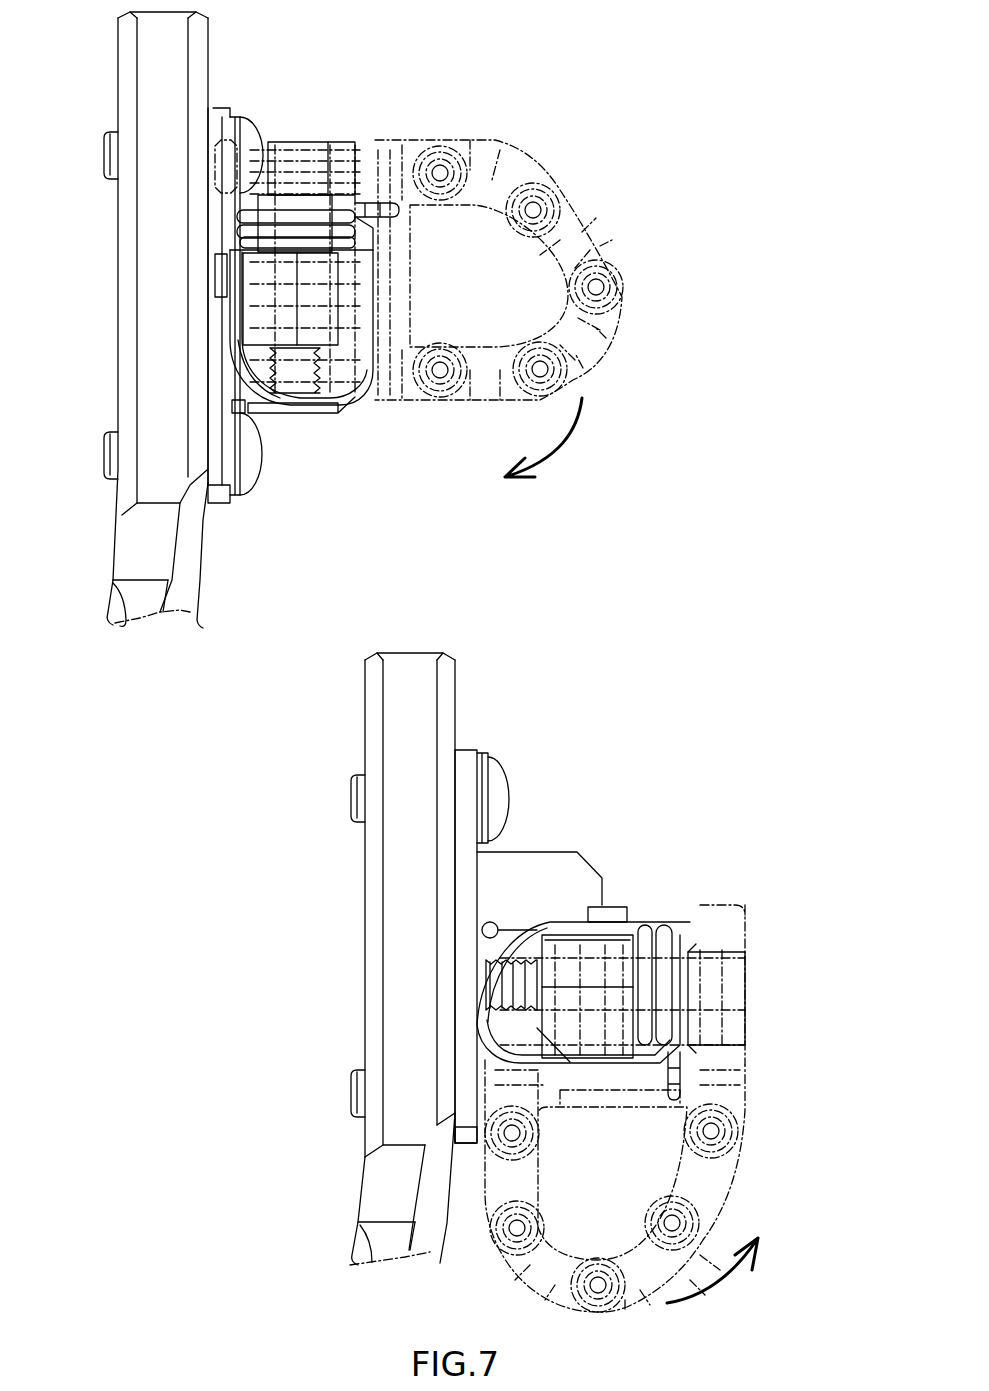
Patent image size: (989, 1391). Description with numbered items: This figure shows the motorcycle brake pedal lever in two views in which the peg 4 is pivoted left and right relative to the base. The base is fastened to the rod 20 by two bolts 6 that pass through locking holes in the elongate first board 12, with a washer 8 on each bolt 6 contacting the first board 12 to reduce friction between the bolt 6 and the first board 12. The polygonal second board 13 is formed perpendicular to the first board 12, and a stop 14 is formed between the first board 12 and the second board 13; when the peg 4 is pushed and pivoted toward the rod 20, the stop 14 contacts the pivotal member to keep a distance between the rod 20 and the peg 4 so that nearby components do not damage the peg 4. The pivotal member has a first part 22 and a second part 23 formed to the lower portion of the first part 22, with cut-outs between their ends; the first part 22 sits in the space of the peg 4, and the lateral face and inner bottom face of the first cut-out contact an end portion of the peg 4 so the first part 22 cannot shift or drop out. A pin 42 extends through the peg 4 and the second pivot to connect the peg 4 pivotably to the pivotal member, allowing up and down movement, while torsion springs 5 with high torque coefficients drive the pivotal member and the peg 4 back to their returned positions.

The rod 20 is at (125, 207).
The first board 12 is at (218, 503).
The washer 8 is at (233, 497).
The bolt 6 is at (257, 457).
The second board 13 is at (533, 860).
The torsion spring 5 is at (230, 222).
The stop 14 is at (267, 390).
The second part 23 is at (373, 370).
The pin 42 is at (303, 143).
The first part 22 is at (248, 325).
The peg 4 is at (528, 175).